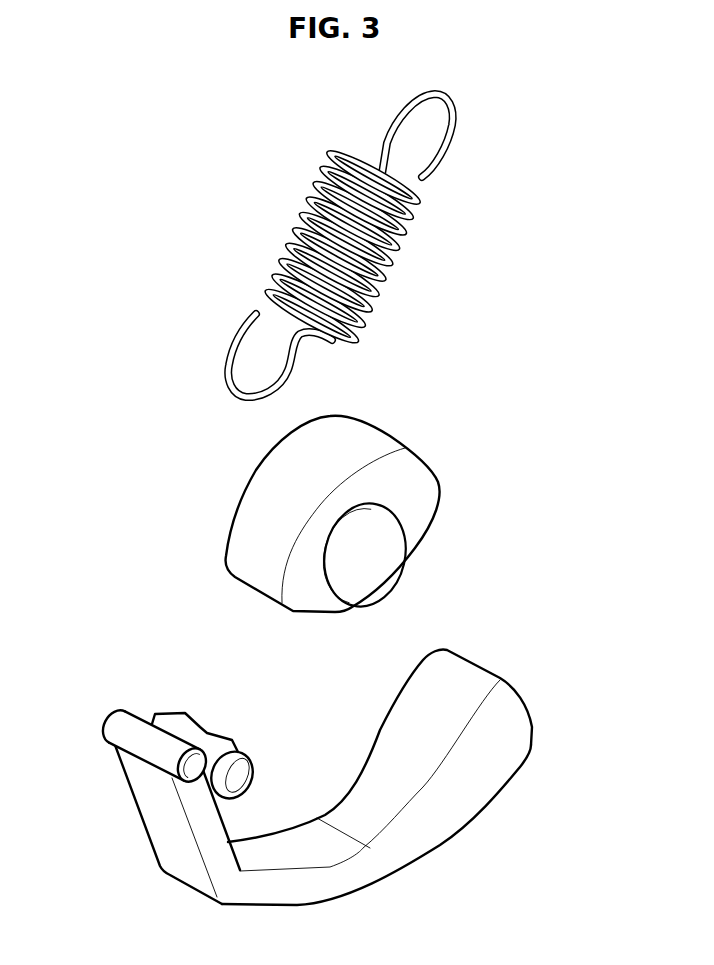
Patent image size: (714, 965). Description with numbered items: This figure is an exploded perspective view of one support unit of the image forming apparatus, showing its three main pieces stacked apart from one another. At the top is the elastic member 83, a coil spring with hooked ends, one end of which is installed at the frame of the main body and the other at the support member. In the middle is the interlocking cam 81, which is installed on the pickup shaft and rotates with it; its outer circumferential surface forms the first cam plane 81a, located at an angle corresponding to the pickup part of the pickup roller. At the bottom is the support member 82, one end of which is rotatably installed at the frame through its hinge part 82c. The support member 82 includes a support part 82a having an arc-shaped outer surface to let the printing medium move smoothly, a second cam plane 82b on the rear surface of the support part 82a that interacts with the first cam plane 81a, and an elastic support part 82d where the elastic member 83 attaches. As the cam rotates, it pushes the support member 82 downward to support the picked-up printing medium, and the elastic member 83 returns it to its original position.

The elastic member 83 is at (447, 204).
The interlocking cam 81 is at (347, 469).
The first cam plane 81a is at (328, 432).
The support member 82 is at (342, 753).
The support part 82a is at (452, 838).
The second cam plane 82b is at (443, 713).
The hinge part 82c is at (152, 750).
The elastic support part 82d is at (197, 735).